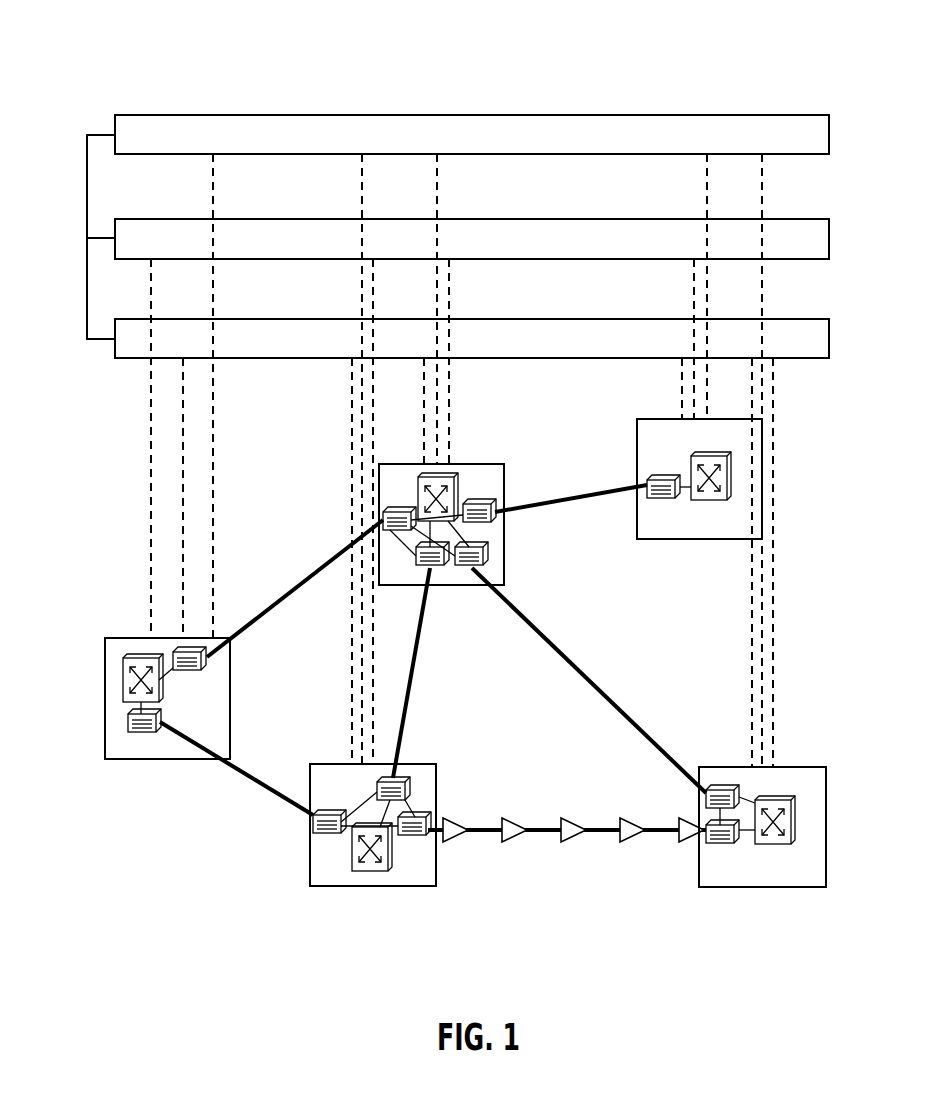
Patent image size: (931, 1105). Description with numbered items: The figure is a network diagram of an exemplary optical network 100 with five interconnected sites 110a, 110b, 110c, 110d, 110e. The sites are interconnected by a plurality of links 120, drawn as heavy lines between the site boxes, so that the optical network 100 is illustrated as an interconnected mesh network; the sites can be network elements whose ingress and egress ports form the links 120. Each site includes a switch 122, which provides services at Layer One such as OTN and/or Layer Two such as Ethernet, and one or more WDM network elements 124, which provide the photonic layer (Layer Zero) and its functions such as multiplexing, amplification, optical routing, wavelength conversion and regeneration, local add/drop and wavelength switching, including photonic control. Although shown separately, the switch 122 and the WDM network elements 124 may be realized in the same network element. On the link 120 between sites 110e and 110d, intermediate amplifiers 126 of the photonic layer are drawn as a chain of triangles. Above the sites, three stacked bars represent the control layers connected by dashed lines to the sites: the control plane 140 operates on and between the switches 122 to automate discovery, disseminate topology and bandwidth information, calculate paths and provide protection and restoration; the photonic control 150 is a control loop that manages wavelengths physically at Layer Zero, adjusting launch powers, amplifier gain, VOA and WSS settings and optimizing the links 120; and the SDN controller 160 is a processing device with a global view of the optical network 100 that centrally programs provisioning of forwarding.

The optical network 100 is at (541, 44).
The SDN controller 160 is at (605, 115).
The photonic control 150 is at (605, 219).
The control plane 140 is at (605, 319).
The site 110a is at (105, 726).
The site 110b is at (473, 463).
The site 110c is at (711, 488).
The site 110d is at (740, 888).
The site 110e is at (308, 870).
The link 120 is at (288, 596).
The switch 122 is at (714, 455).
The WDM network element 124 is at (663, 478).
The intermediate amplifier 126 is at (455, 815).